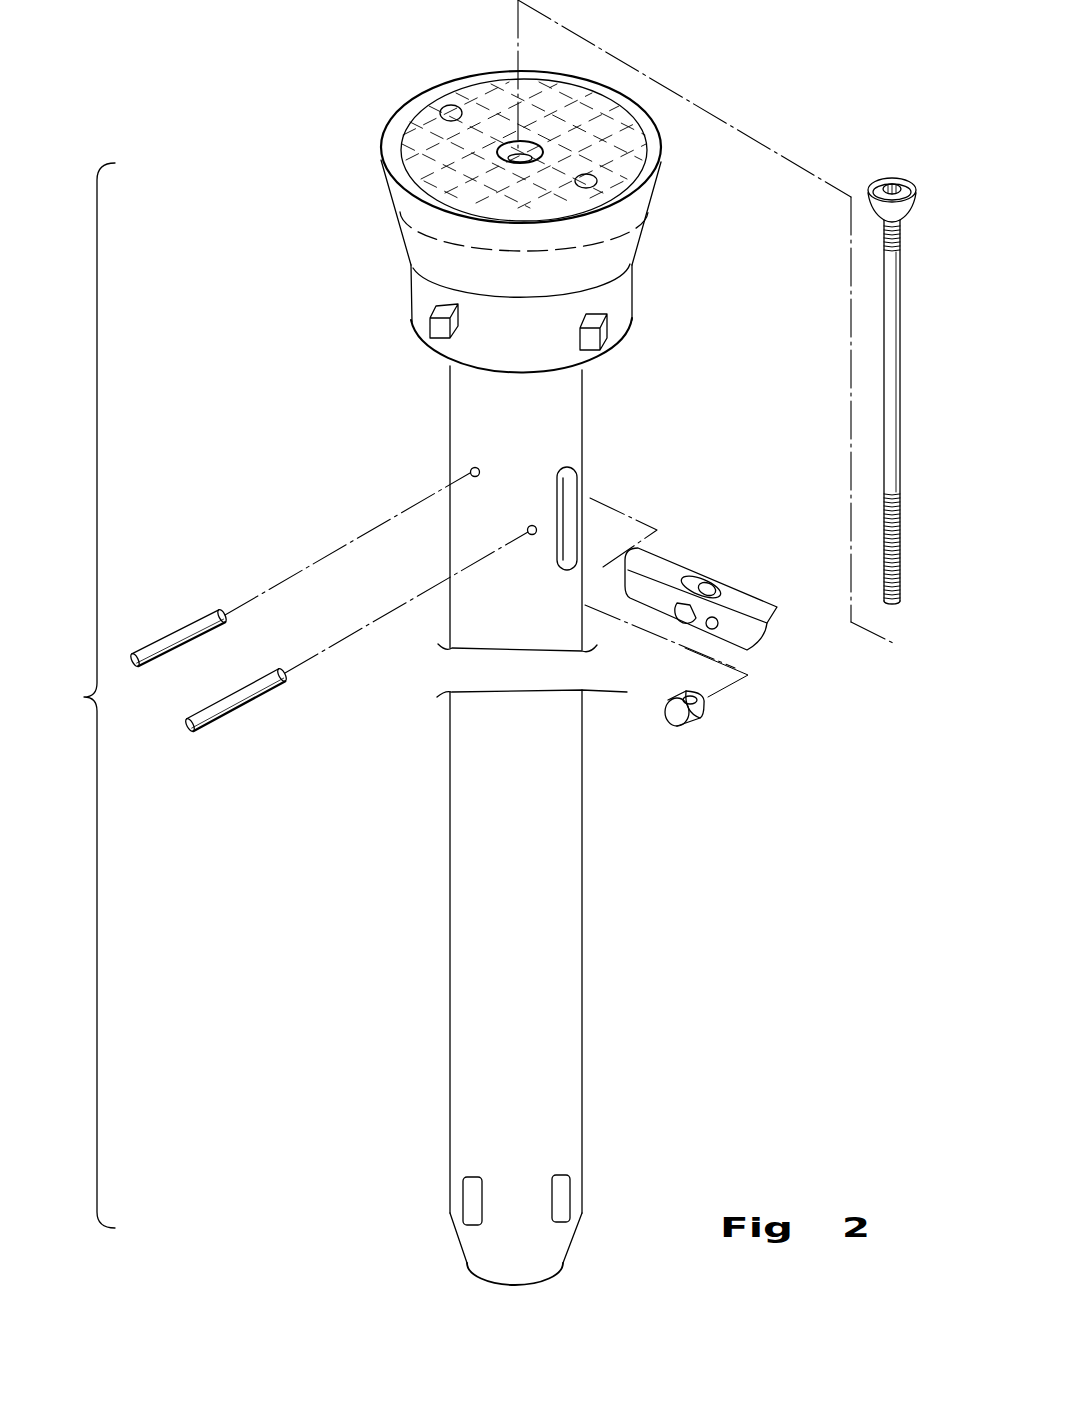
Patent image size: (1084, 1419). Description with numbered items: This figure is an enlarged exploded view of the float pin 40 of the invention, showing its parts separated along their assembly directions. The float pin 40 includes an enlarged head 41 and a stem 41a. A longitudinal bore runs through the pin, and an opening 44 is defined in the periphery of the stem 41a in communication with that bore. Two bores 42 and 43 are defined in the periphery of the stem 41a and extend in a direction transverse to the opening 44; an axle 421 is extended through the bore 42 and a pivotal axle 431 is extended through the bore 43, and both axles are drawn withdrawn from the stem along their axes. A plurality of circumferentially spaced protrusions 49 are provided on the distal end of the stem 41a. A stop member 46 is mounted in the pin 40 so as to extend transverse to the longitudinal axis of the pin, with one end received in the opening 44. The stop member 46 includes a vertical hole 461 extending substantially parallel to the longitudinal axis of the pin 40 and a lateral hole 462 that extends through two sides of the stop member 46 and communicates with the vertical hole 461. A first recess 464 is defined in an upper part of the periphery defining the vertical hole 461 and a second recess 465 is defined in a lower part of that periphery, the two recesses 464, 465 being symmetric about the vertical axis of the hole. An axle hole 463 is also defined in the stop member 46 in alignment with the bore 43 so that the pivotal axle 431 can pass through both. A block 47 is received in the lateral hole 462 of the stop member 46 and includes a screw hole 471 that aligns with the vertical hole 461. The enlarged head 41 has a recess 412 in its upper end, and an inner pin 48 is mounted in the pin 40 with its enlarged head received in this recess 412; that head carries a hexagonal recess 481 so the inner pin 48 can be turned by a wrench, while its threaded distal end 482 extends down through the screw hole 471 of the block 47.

The float pin 40 is at (637, 375).
The enlarged head 41 is at (418, 132).
The stem 41a is at (578, 877).
The recess 412 is at (512, 152).
The bore 42 is at (470, 471).
The axle 421 is at (173, 647).
The bore 43 is at (537, 527).
The pivotal axle 431 is at (262, 697).
The opening 44 is at (575, 483).
The stop member 46 is at (748, 607).
The vertical hole 461 is at (693, 578).
The lateral hole 462 is at (682, 601).
The axle hole 463 is at (717, 630).
The first recess 464 is at (712, 586).
The second recess 465 is at (662, 608).
The block 47 is at (683, 728).
The screw hole 471 is at (678, 697).
The inner pin 48 is at (913, 366).
The hexagonal recess 481 is at (891, 180).
The threaded distal end 482 is at (897, 549).
The protrusions 49 is at (463, 1184).